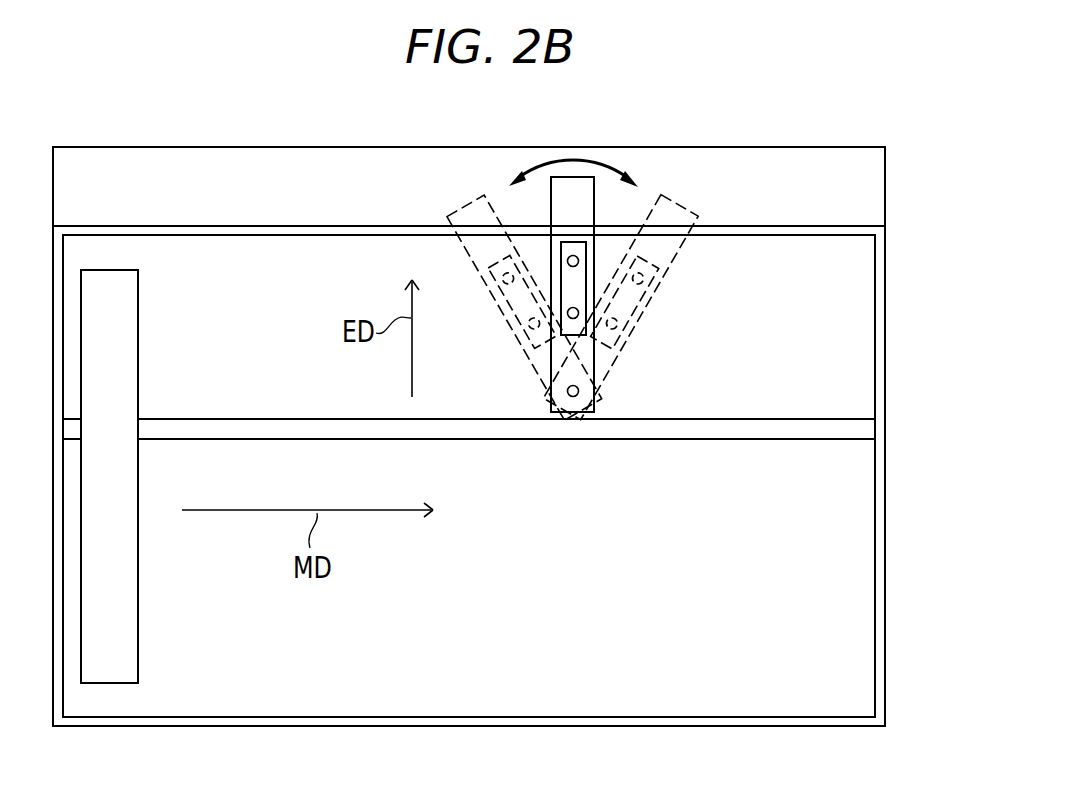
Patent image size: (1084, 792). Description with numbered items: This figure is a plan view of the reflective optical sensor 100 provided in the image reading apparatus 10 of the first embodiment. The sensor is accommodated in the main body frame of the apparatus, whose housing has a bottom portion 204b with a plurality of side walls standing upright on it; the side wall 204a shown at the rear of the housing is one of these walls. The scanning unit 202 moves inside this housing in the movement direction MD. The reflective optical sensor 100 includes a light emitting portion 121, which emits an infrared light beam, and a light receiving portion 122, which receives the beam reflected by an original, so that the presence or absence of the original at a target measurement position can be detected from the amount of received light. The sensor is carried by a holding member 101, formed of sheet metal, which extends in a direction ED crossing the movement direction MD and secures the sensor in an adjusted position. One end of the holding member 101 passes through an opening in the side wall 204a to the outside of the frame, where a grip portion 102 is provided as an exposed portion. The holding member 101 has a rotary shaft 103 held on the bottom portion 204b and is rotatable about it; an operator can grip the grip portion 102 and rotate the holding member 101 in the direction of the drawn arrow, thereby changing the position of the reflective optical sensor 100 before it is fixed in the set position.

The image reading apparatus 10 is at (302, 136).
The reflective optical sensor 100 is at (573, 290).
The holding member 101 is at (583, 357).
The grip portion 102 is at (582, 200).
The rotary shaft 103 is at (579, 393).
The light emitting portion 121 is at (579, 260).
The light receiving portion 122 is at (579, 313).
The scanning unit 202 is at (112, 290).
The side wall 204a is at (773, 225).
The bottom portion 204b is at (512, 401).